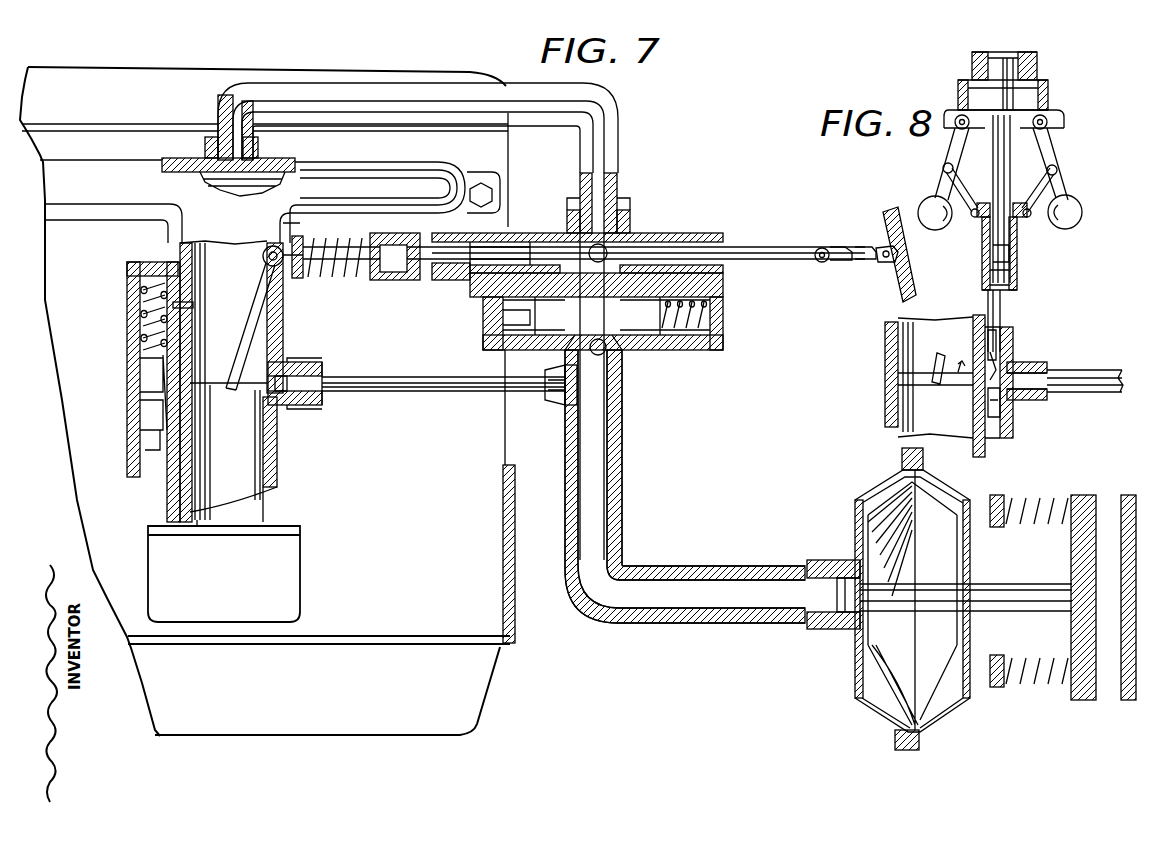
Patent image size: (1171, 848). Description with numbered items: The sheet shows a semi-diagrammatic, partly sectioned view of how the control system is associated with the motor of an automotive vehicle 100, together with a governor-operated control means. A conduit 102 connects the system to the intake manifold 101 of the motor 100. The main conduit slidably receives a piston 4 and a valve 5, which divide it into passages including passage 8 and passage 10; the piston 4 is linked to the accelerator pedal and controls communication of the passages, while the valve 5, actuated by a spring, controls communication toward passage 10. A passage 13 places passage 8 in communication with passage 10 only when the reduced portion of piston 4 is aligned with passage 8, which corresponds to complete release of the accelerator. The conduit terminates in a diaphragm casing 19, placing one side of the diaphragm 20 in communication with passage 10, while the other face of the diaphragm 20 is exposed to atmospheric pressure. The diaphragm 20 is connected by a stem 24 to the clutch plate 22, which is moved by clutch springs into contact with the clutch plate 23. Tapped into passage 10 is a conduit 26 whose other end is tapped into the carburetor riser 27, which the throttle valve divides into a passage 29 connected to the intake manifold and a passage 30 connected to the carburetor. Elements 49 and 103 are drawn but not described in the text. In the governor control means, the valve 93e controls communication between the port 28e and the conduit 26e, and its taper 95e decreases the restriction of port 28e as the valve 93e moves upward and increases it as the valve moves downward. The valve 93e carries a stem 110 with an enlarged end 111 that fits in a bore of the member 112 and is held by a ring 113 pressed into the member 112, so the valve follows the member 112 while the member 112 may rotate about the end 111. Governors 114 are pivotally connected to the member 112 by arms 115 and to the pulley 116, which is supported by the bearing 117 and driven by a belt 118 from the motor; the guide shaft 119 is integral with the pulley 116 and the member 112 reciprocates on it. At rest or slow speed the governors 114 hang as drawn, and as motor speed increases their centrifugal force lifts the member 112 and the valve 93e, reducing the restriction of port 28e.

In FIG. 7, the piston 4 is at (767, 262).
In FIG. 7, the valve 5 is at (655, 320).
In FIG. 7, the passage 8 is at (600, 194).
In FIG. 7, the passage 10 is at (593, 518).
In FIG. 7, the passage 13 is at (558, 353).
In FIG. 7, the diaphragm casing 19 is at (950, 495).
In FIG. 7, the diaphragm 20 is at (855, 533).
In FIG. 7, the clutch plate 22 is at (1083, 495).
In FIG. 7, the clutch plate 23 is at (1130, 495).
In FIG. 7, the stem 24 is at (998, 598).
In FIG. 7, the conduit 26 is at (432, 378).
In FIG. 7, the carburetor riser 27 is at (283, 430).
In FIG. 7, the passage 29 is at (262, 325).
In FIG. 7, the passage 30 is at (252, 478).
In FIG. 7, the valve body 49 is at (637, 332).
In FIG. 7, the motor of an automotive vehicle 100 is at (473, 590).
In FIG. 7, the intake manifold 101 is at (440, 182).
In FIG. 7, the conduit 102 is at (608, 118).
In FIG. 7, the box 103 is at (280, 560).
In FIG. 8, the stem 110 is at (1002, 297).
In FIG. 8, the enlarged end 111 is at (1012, 270).
In FIG. 8, the member 112 is at (982, 262).
In FIG. 8, the ring 113 is at (990, 300).
In FIG. 8, the governors 114 is at (920, 200).
In FIG. 8, the arms 115 is at (970, 175).
In FIG. 8, the pulley 116 is at (1037, 80).
In FIG. 8, the bearing 117 is at (968, 67).
In FIG. 8, the belt 118 is at (1048, 98).
In FIG. 8, the guide shaft 119 is at (1004, 135).
In FIG. 8, the valve 93e is at (995, 345).
In FIG. 8, the taper 95e is at (1018, 364).
In FIG. 8, the conduit 26e is at (1095, 370).
In FIG. 8, the port 28e is at (1005, 420).